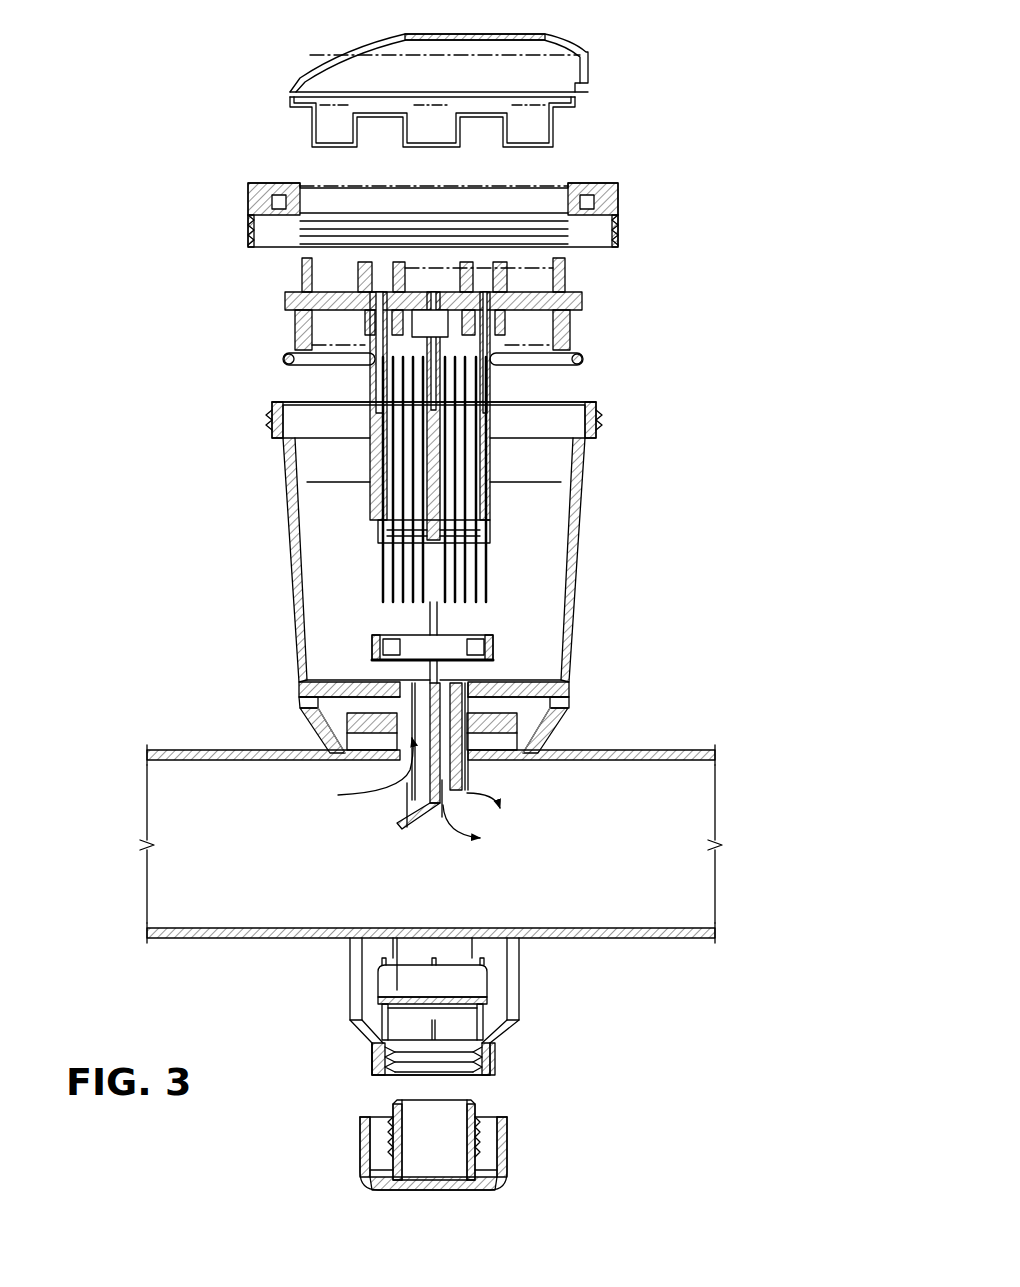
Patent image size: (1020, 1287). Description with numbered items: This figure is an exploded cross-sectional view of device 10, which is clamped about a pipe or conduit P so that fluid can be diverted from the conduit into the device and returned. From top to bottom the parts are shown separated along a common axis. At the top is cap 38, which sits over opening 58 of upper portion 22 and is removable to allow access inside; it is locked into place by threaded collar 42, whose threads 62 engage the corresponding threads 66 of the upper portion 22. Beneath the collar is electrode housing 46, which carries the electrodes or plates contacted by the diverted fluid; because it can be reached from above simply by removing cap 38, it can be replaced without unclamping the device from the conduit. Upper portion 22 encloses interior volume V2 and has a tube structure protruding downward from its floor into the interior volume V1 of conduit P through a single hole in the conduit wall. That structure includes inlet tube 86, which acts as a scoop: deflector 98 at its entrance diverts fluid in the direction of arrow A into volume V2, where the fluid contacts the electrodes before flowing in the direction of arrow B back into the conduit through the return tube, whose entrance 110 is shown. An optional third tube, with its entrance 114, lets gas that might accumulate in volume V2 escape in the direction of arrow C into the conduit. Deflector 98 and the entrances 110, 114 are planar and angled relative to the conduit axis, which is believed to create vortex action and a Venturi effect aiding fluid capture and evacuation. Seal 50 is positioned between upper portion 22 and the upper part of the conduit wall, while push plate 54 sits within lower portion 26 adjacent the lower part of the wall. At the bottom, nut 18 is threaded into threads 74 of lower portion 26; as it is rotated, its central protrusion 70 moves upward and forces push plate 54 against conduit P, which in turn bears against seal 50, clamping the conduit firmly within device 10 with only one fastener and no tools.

The device 10 is at (698, 168).
The cap 38 is at (552, 60).
The collar 42 is at (590, 183).
The threads 62 is at (600, 245).
The electrode housing 46 is at (568, 278).
The opening 58 is at (545, 392).
The push plate 54 is at (478, 978).
The upper portion 22 is at (296, 575).
The threads 66 is at (600, 420).
The seal 50 is at (510, 730).
The inlet tube 86 is at (400, 697).
The deflector 98 is at (405, 826).
The entrance 110 is at (443, 810).
The entrance 114 is at (465, 797).
The conduit P is at (636, 937).
The interior volume V1 is at (260, 882).
The interior volume V2 is at (330, 540).
The arrow A is at (363, 773).
The arrow B is at (475, 827).
The arrow C is at (494, 803).
The lower portion 26 is at (353, 990).
The threads 74 is at (372, 1062).
The central protrusion 70 is at (467, 1104).
The nut 18 is at (495, 1190).